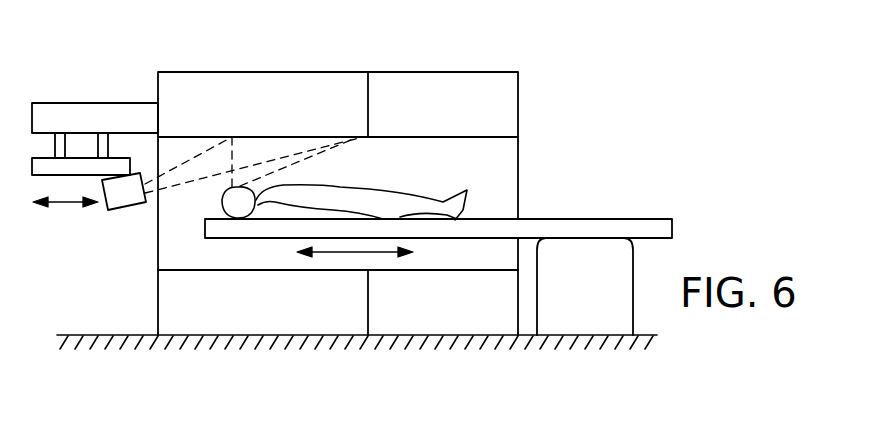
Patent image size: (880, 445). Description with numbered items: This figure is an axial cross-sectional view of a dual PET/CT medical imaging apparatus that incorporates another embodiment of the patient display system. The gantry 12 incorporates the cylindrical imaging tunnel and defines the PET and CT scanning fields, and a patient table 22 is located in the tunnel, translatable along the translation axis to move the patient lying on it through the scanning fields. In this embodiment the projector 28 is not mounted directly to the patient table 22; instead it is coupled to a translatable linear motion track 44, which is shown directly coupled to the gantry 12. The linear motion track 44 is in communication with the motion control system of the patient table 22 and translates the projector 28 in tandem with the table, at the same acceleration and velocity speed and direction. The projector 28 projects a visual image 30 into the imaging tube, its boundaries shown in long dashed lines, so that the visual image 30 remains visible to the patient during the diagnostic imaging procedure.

The gantry 12 is at (353, 62).
The patient table 22 is at (255, 246).
The projector 28 is at (123, 198).
The visual image 30 is at (362, 125).
The linear motion track 44 is at (70, 167).